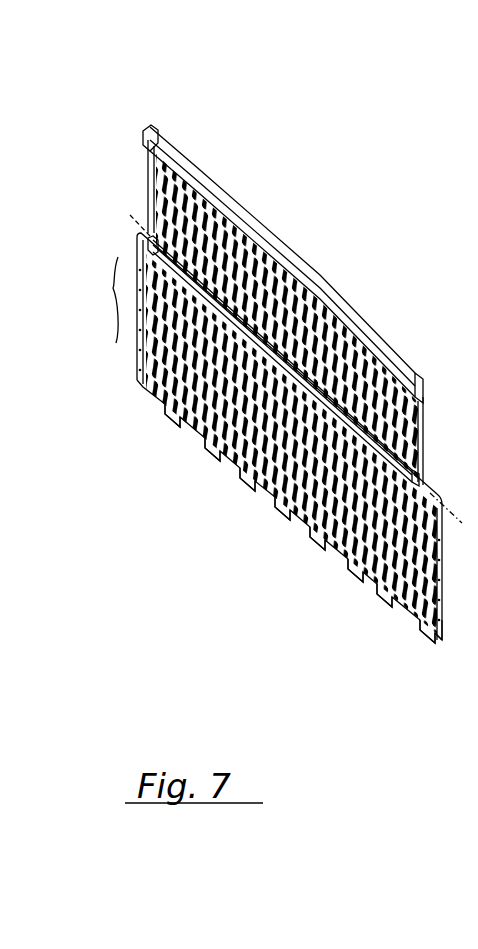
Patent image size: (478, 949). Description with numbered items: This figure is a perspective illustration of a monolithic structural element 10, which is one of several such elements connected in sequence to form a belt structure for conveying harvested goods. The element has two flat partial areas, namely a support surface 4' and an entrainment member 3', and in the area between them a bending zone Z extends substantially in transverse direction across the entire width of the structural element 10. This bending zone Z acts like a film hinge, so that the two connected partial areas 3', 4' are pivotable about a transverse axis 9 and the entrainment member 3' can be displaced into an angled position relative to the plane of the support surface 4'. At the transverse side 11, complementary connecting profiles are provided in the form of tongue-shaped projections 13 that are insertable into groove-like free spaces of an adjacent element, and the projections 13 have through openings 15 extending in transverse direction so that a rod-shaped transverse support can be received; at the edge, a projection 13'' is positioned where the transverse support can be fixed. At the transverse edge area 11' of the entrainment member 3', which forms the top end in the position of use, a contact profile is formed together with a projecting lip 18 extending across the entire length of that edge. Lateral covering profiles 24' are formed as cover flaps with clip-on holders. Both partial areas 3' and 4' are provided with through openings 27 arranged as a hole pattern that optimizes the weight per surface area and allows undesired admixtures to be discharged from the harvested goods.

The structural element 10 is at (181, 88).
The transverse side 11 is at (289, 436).
The transverse edge area 11' is at (255, 213).
The entrainment member 3' is at (442, 421).
The support surface 4' is at (91, 300).
The transverse axis 9 is at (444, 498).
The projection 13 is at (289, 516).
The projection positioned at the edge 13'' is at (417, 691).
The through opening 15 is at (357, 582).
The lip 18 is at (357, 330).
The lateral covering profile 24' is at (263, 291).
The through openings 27 is at (210, 233).
The bending zone Z is at (130, 215).